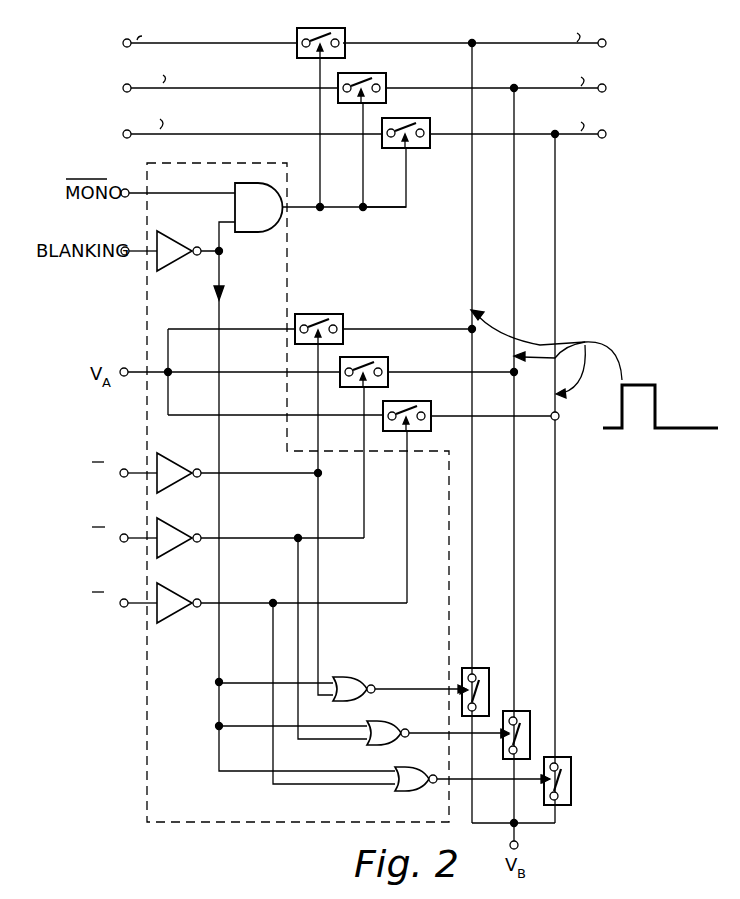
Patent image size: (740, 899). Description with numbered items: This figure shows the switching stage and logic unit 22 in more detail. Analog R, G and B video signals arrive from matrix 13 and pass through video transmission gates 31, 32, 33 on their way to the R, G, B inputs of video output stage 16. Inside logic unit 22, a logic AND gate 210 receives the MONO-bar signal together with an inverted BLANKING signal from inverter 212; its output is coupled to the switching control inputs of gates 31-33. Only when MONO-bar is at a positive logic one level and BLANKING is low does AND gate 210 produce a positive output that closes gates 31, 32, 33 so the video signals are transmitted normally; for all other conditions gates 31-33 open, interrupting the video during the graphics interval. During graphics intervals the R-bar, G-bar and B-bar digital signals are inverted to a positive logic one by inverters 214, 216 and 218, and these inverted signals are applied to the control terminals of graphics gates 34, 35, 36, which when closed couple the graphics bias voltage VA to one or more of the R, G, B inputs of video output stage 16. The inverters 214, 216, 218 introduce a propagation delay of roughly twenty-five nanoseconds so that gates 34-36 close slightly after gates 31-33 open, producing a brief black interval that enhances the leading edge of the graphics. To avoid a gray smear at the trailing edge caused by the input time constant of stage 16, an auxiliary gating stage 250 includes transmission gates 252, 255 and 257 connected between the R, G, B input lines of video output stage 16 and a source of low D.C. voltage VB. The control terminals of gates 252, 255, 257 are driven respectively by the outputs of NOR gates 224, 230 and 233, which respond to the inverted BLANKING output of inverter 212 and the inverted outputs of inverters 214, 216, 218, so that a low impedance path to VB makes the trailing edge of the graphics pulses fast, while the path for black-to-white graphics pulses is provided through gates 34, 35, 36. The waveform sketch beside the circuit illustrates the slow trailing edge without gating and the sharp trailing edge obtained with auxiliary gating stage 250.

The matrix 13 is at (213, 81).
The video output stage 16 is at (523, 87).
The logic unit 22 is at (146, 655).
The gate 31 is at (343, 30).
The gate 32 is at (385, 72).
The gate 33 is at (428, 117).
The gate 34 is at (340, 305).
The gate 35 is at (390, 358).
The gate 36 is at (428, 399).
The logic AND gate 210 is at (268, 231).
The inverter 212 is at (172, 233).
The inverter 214 is at (178, 455).
The inverter 216 is at (178, 520).
The inverter 218 is at (172, 585).
The logic NOR gate 224 is at (343, 664).
The logic NOR gate 230 is at (392, 720).
The logic NOR gate 233 is at (412, 764).
The auxiliary gating stage 250 is at (674, 742).
The transmission gate 252 is at (487, 666).
The transmission gate 255 is at (528, 708).
The transmission gate 257 is at (572, 758).